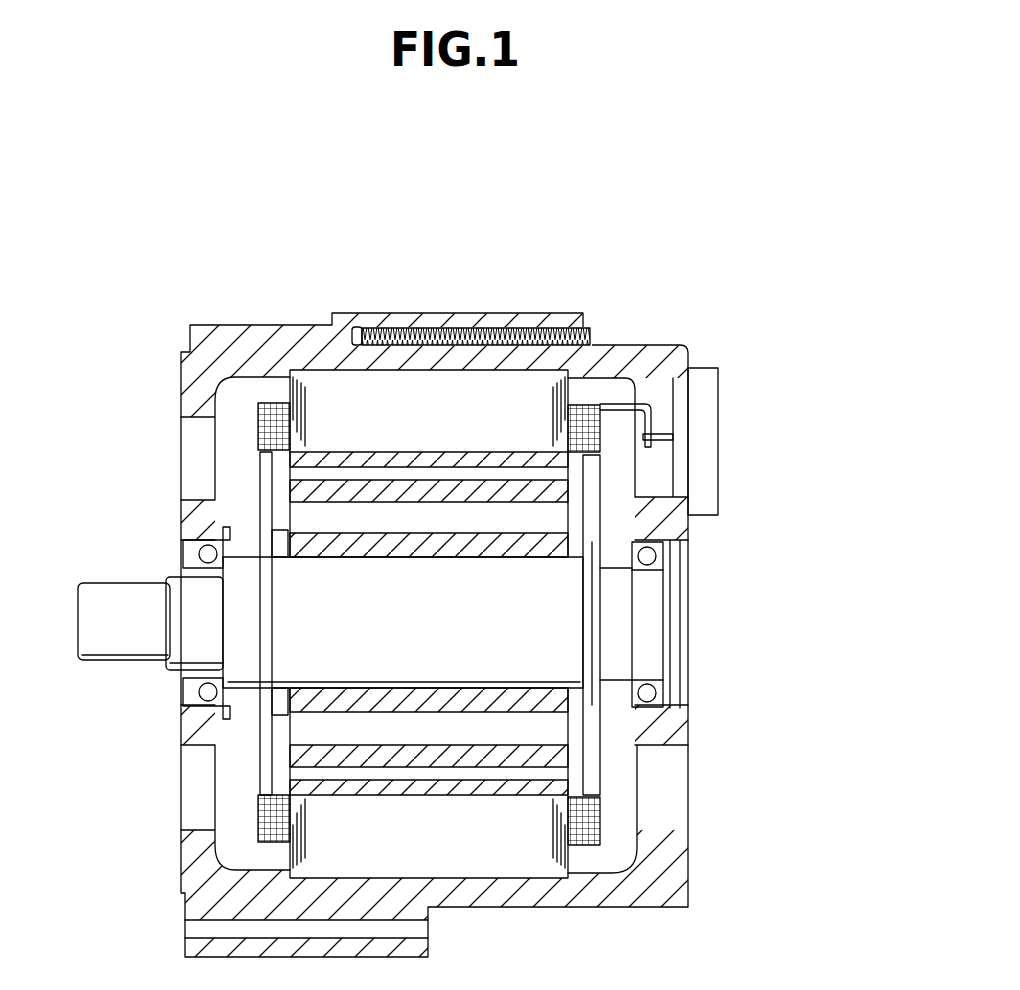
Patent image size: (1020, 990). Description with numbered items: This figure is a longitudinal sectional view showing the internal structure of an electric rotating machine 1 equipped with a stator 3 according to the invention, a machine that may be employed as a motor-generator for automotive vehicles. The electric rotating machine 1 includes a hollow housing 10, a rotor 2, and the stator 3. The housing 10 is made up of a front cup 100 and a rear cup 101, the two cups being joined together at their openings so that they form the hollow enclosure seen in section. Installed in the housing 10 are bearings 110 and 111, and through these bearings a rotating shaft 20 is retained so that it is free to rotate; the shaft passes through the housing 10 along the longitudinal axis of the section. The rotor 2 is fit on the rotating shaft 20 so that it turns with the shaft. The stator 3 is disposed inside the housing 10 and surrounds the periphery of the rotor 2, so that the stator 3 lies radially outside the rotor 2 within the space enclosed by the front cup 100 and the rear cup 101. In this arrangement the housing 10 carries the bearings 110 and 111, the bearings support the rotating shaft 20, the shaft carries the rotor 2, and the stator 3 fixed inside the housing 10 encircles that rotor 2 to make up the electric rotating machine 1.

The electric rotating machine 1 is at (464, 583).
The housing 10 is at (449, 570).
The front cup 100 is at (352, 315).
The rear cup 101 is at (453, 318).
The rotor 2 is at (560, 492).
The stator 3 is at (545, 405).
The rotating shaft 20 is at (130, 642).
The bearing 110 is at (197, 540).
The bearing 111 is at (650, 548).